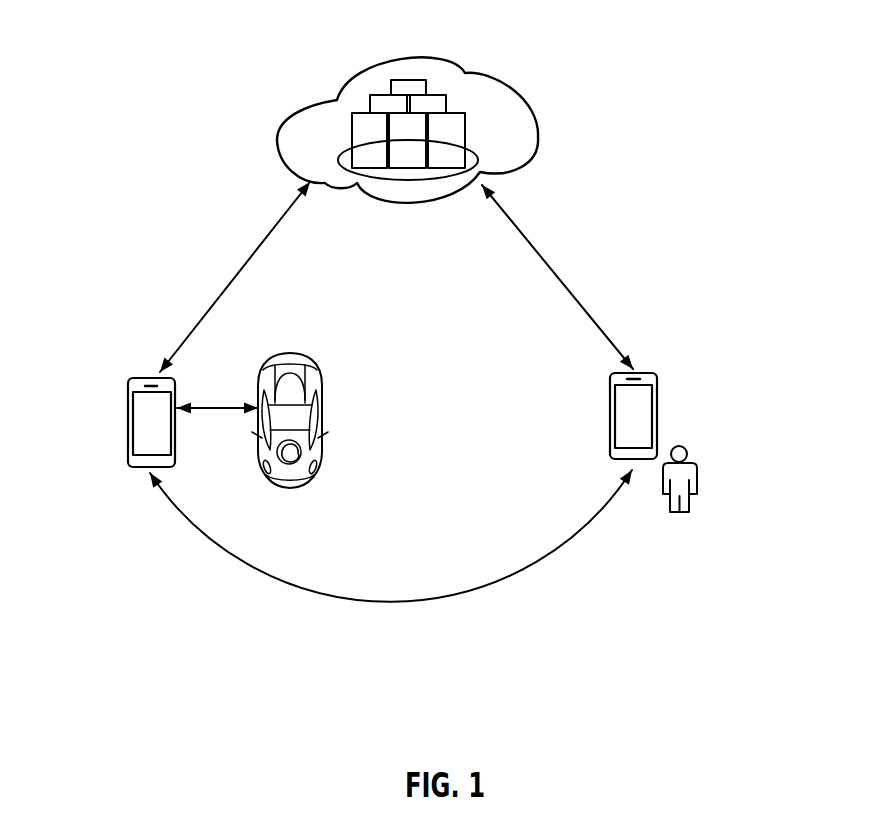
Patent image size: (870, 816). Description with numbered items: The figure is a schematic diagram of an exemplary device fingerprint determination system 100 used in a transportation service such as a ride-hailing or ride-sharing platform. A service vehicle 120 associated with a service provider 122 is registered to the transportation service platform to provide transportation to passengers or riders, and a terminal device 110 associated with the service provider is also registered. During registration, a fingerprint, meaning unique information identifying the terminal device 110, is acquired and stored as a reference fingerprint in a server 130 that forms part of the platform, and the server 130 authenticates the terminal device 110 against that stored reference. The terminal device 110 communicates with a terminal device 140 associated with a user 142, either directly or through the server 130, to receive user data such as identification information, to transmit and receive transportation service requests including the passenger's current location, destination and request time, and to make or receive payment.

The device fingerprint determination system 100 is at (523, 34).
The terminal device 110 is at (133, 429).
The service vehicle 120 is at (318, 368).
The service provider 122 is at (295, 463).
The server 130 is at (537, 128).
The terminal device 140 is at (648, 372).
The user 142 is at (692, 512).